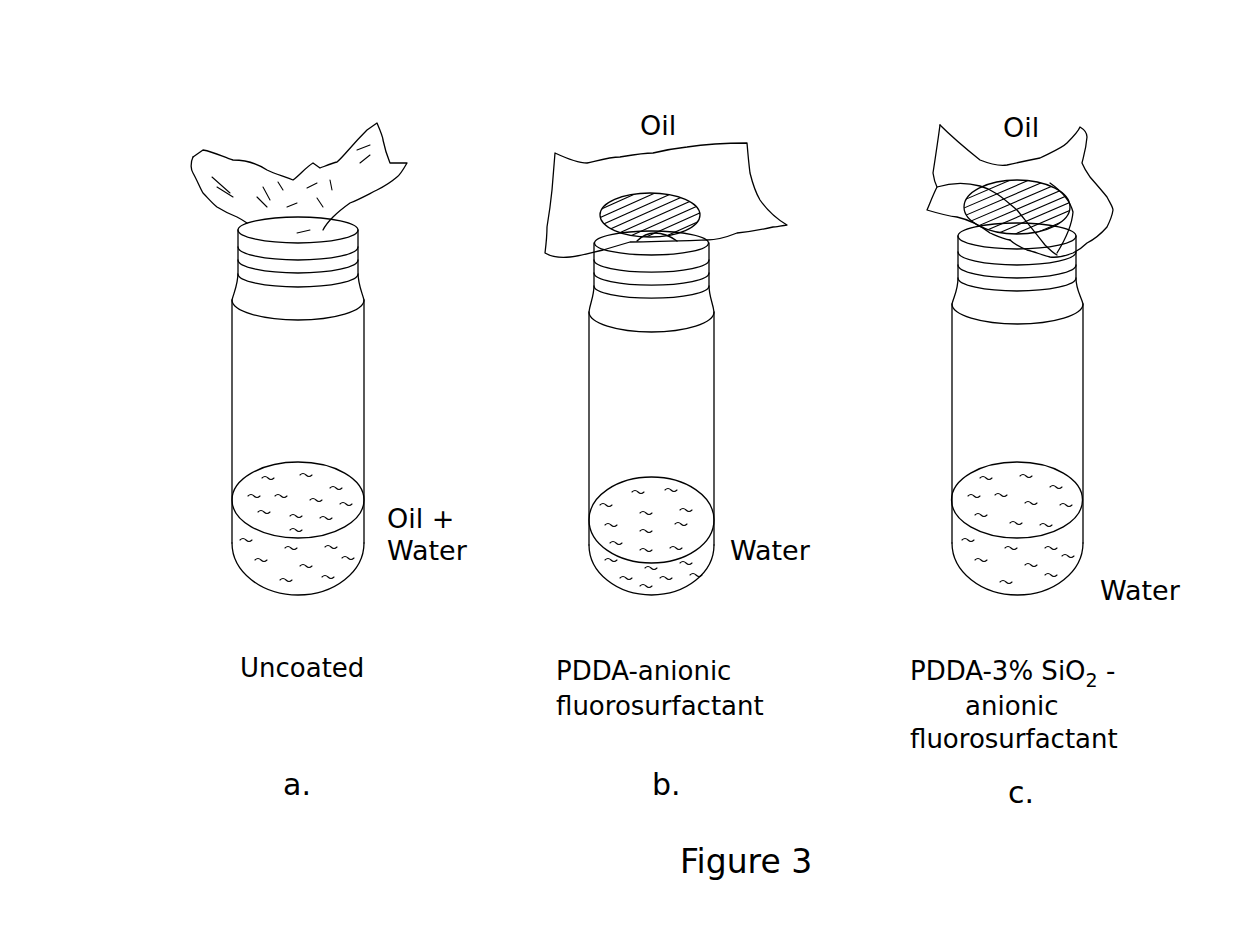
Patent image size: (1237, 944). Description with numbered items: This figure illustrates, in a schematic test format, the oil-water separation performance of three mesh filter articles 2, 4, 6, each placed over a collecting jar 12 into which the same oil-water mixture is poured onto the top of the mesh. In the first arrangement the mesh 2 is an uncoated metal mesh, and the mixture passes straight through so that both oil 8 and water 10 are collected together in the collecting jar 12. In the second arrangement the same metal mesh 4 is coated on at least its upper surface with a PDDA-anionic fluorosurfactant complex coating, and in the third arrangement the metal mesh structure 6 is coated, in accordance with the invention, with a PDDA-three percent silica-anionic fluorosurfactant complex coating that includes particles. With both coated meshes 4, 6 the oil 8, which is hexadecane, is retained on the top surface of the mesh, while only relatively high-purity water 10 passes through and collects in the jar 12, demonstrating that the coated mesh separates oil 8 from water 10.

The mesh 2 is at (295, 178).
The metal mesh 4 is at (703, 147).
The metal mesh structure 6 is at (978, 150).
The oil 8 is at (255, 512).
The water 10 is at (262, 565).
The collecting jar 12 is at (257, 388).